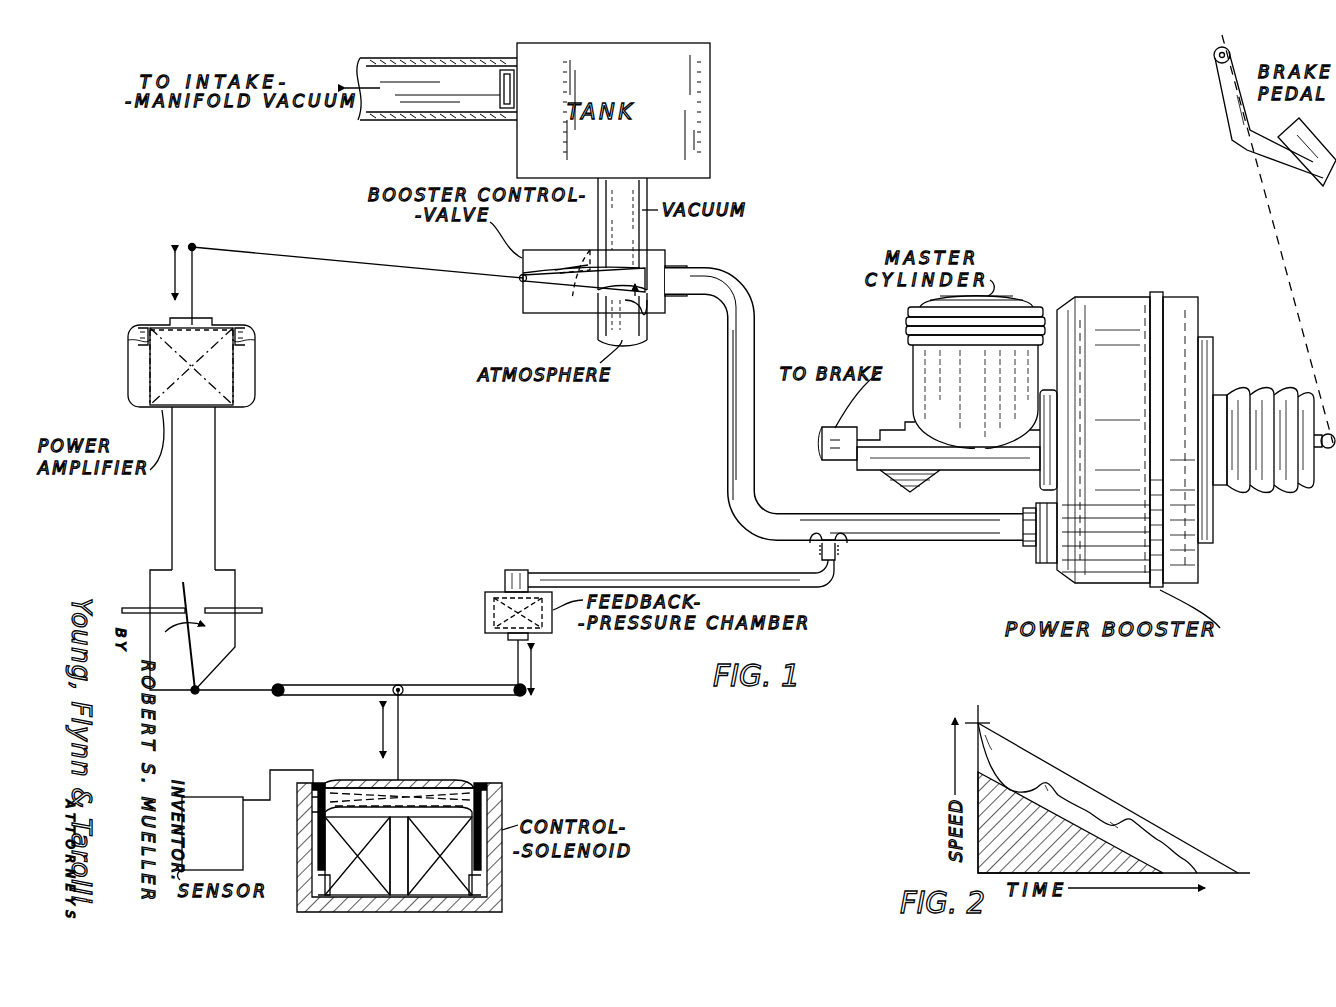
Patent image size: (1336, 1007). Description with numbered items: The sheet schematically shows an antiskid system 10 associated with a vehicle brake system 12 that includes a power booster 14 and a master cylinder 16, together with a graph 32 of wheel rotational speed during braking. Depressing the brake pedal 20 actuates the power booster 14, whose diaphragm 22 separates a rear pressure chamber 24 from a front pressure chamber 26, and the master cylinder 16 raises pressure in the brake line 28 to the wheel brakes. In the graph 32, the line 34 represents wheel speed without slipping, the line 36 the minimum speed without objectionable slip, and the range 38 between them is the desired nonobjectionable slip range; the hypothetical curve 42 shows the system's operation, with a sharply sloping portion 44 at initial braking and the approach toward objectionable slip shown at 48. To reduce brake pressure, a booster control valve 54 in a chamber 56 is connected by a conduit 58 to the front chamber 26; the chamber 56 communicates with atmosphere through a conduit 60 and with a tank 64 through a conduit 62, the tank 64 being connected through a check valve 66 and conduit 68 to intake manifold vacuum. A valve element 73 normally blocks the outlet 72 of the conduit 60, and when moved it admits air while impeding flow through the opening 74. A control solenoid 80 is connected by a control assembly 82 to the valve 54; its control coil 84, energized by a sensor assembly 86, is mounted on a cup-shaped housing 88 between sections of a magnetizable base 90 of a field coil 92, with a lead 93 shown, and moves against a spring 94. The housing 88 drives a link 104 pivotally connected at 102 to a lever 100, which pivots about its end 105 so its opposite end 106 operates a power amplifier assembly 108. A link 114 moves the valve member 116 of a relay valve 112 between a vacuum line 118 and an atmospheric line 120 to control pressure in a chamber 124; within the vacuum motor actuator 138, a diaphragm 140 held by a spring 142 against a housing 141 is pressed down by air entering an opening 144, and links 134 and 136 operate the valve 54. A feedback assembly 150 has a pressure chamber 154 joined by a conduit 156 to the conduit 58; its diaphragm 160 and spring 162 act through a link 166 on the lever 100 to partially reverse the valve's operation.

In FIG. 1, the antiskid system 10 is at (116, 264).
In FIG. 1, the vehicle brake system 12 is at (1100, 166).
In FIG. 1, the power booster 14 is at (1205, 560).
In FIG. 1, the master cylinder 16 is at (918, 358).
In FIG. 1, the brake pedal 20 is at (1322, 172).
In FIG. 1, the diaphragm 22 is at (1135, 297).
In FIG. 1, the rear pressure chamber 24 is at (1195, 298).
In FIG. 1, the front pressure chamber 26 is at (1098, 300).
In FIG. 1, the brake line 28 is at (822, 441).
In FIG. 2, the graph 32 is at (1038, 722).
In FIG. 2, the line 34 is at (1030, 752).
In FIG. 2, the line 36 is at (1082, 802).
In FIG. 2, the range 38 is at (1048, 782).
In FIG. 2, the hypothetical curve 42 is at (1115, 818).
In FIG. 2, the sharply sloping portion 44 is at (992, 740).
In FIG. 2, the curve portion approaching objectionable slip 48 is at (986, 780).
In FIG. 1, the booster control valve 54 is at (515, 290).
In FIG. 1, the chamber 56 is at (540, 256).
In FIG. 1, the conduit 58 is at (728, 394).
In FIG. 1, the conduit 60 is at (600, 326).
In FIG. 1, the conduit 62 is at (598, 215).
In FIG. 1, the tank 64 is at (700, 108).
In FIG. 1, the check valve 66 is at (500, 82).
In FIG. 1, the conduit 68 is at (468, 116).
In FIG. 1, the outlet 72 is at (642, 316).
In FIG. 1, the valve element 73 is at (590, 250).
In FIG. 1, the opening 74 is at (635, 280).
In FIG. 1, the control solenoid 80 is at (540, 792).
In FIG. 1, the control assembly 82 is at (332, 507).
In FIG. 1, the control coil 84 is at (483, 786).
In FIG. 1, the sensor assembly 86 is at (222, 800).
In FIG. 1, the cup-shaped housing 88 is at (424, 778).
In FIG. 1, the magnetizable base 90 is at (492, 872).
In FIG. 1, the field coil 92 is at (330, 862).
In FIG. 1, the coil lead 93 is at (312, 806).
In FIG. 1, the spring 94 is at (368, 780).
In FIG. 1, the lever 100 is at (378, 676).
In FIG. 1, the pivot 102 is at (399, 684).
In FIG. 1, the link 104 is at (400, 718).
In FIG. 1, the lever end 105 is at (520, 695).
In FIG. 1, the opposite end 106 is at (280, 680).
In FIG. 1, the power amplifier assembly 108 is at (134, 542).
In FIG. 1, the relay valve 112 is at (253, 592).
In FIG. 1, the link 114 is at (222, 688).
In FIG. 1, the valve member 116 is at (190, 643).
In FIG. 1, the vacuum line 118 is at (138, 607).
In FIG. 1, the atmospheric line 120 is at (258, 612).
In FIG. 1, the chamber 124 is at (197, 470).
In FIG. 1, the link 134 is at (196, 277).
In FIG. 1, the link 136 is at (298, 252).
In FIG. 1, the vacuum motor actuator 138 is at (285, 350).
In FIG. 1, the diaphragm 140 is at (148, 325).
In FIG. 1, the housing 141 is at (256, 372).
In FIG. 1, the spring 142 is at (148, 366).
In FIG. 1, the opening 144 is at (205, 320).
In FIG. 1, the feedback assembly 150 is at (520, 562).
In FIG. 1, the pressure chamber 154 is at (484, 612).
In FIG. 1, the conduit 156 is at (638, 572).
In FIG. 1, the diaphragm 160 is at (505, 637).
In FIG. 1, the spring 162 is at (503, 582).
In FIG. 1, the link 166 is at (517, 664).